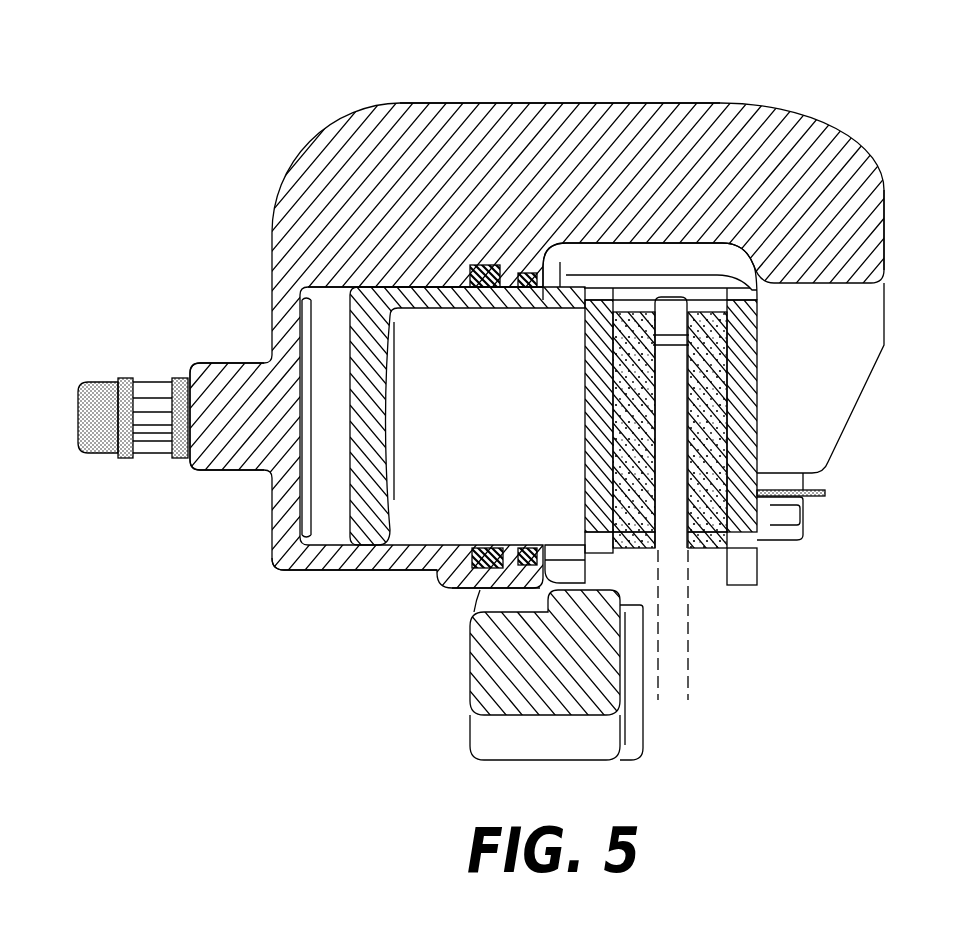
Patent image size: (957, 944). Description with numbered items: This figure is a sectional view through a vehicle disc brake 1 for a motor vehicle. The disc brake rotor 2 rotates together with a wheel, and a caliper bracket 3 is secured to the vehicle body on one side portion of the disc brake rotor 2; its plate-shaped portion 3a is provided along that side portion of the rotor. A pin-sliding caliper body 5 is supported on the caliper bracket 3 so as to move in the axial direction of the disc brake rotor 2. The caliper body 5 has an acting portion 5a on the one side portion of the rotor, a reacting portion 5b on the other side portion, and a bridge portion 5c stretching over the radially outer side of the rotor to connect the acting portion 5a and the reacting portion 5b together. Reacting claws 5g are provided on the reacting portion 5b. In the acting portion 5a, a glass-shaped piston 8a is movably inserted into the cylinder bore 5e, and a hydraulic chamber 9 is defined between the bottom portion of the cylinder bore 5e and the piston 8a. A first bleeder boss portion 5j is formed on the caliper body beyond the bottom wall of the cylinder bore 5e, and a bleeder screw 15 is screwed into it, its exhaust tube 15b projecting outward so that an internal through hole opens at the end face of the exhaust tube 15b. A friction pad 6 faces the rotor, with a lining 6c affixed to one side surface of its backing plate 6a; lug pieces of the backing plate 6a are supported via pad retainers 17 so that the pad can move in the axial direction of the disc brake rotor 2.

The vehicle disc brake 1 is at (507, 46).
The disc brake rotor 2 is at (688, 653).
The caliper bracket 3 is at (521, 674).
The plate-shaped portion 3a is at (480, 656).
The caliper body 5 is at (564, 324).
The acting portion 5a is at (327, 557).
The reacting portion 5b is at (880, 238).
The bridge portion 5c is at (585, 122).
The cylinder bore 5e is at (450, 290).
The reacting claw 5g is at (826, 437).
The first bleeder boss portion 5j is at (225, 377).
The friction pad 6 is at (667, 442).
The backing plate 6a is at (595, 383).
The lining 6c is at (607, 414).
The piston 8a is at (375, 436).
The hydraulic chamber 9 is at (322, 356).
The bleeder screw 15 is at (133, 417).
The exhaust tube 15b is at (155, 442).
The pad retainer 17 is at (828, 494).